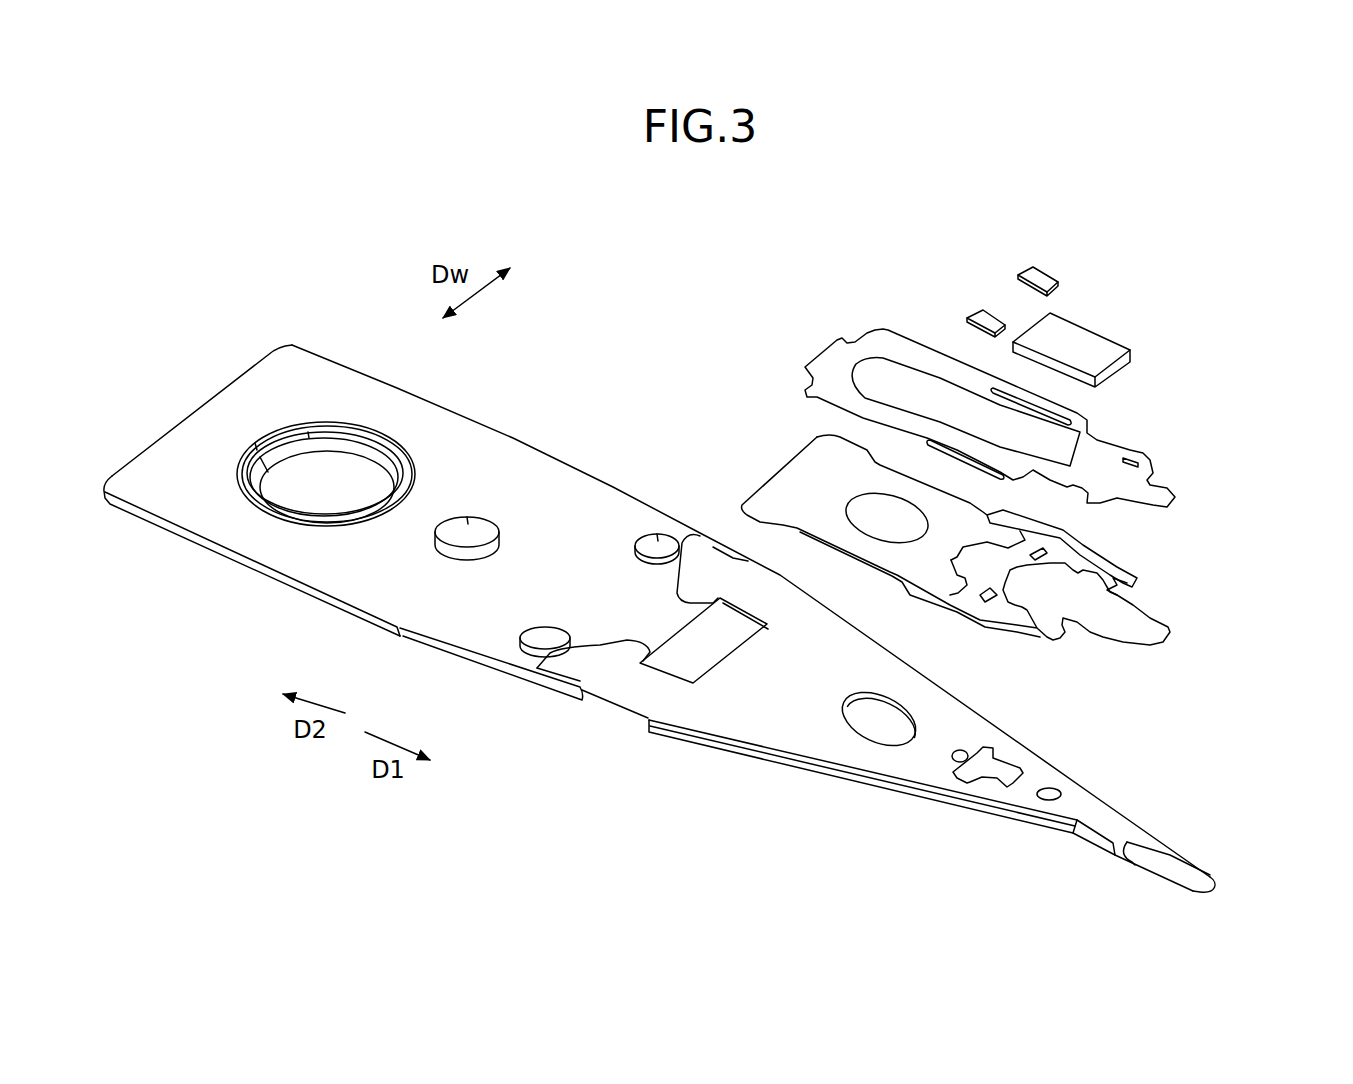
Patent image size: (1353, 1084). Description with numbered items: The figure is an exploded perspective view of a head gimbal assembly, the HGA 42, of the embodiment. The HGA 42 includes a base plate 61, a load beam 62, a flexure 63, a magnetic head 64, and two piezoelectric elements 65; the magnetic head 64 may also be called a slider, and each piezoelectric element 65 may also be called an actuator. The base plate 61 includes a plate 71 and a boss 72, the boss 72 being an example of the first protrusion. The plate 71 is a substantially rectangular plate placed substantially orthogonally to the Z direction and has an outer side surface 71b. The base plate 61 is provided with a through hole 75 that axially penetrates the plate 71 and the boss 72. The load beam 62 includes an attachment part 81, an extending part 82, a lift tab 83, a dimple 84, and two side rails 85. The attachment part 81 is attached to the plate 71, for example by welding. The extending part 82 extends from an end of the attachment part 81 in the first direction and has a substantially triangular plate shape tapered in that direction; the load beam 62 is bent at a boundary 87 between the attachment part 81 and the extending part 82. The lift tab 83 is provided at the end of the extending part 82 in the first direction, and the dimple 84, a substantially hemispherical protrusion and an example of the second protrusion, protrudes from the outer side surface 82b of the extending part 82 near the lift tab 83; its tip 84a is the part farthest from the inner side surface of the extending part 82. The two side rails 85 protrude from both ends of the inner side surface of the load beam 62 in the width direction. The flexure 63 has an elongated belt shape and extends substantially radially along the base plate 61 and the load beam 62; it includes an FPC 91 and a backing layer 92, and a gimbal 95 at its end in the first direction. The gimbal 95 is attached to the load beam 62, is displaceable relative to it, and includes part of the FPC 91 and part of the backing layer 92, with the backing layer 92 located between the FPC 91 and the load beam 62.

The HGA 42 is at (266, 232).
The base plate 61 is at (318, 350).
The load beam 62 is at (807, 677).
The side rails 85 is at (818, 775).
The flexure 63 is at (1255, 478).
The magnetic head 64 is at (1105, 355).
The piezoelectric element 65 is at (1047, 279).
The plate 71 is at (751, 611).
The outer side surface 71b is at (543, 480).
The boss 72 is at (252, 488).
The through hole 75 is at (352, 478).
The attachment part 81 is at (708, 565).
The extending part 82 is at (942, 705).
The outer side surface 82b is at (960, 730).
The lift tab 83 is at (1175, 872).
The dimple 84 is at (1088, 758).
The tip 84a is at (1050, 788).
The boundary 87 is at (640, 700).
The FPC 91 is at (1157, 495).
The backing layer 92 is at (1137, 623).
The gimbal 95 is at (1127, 465).